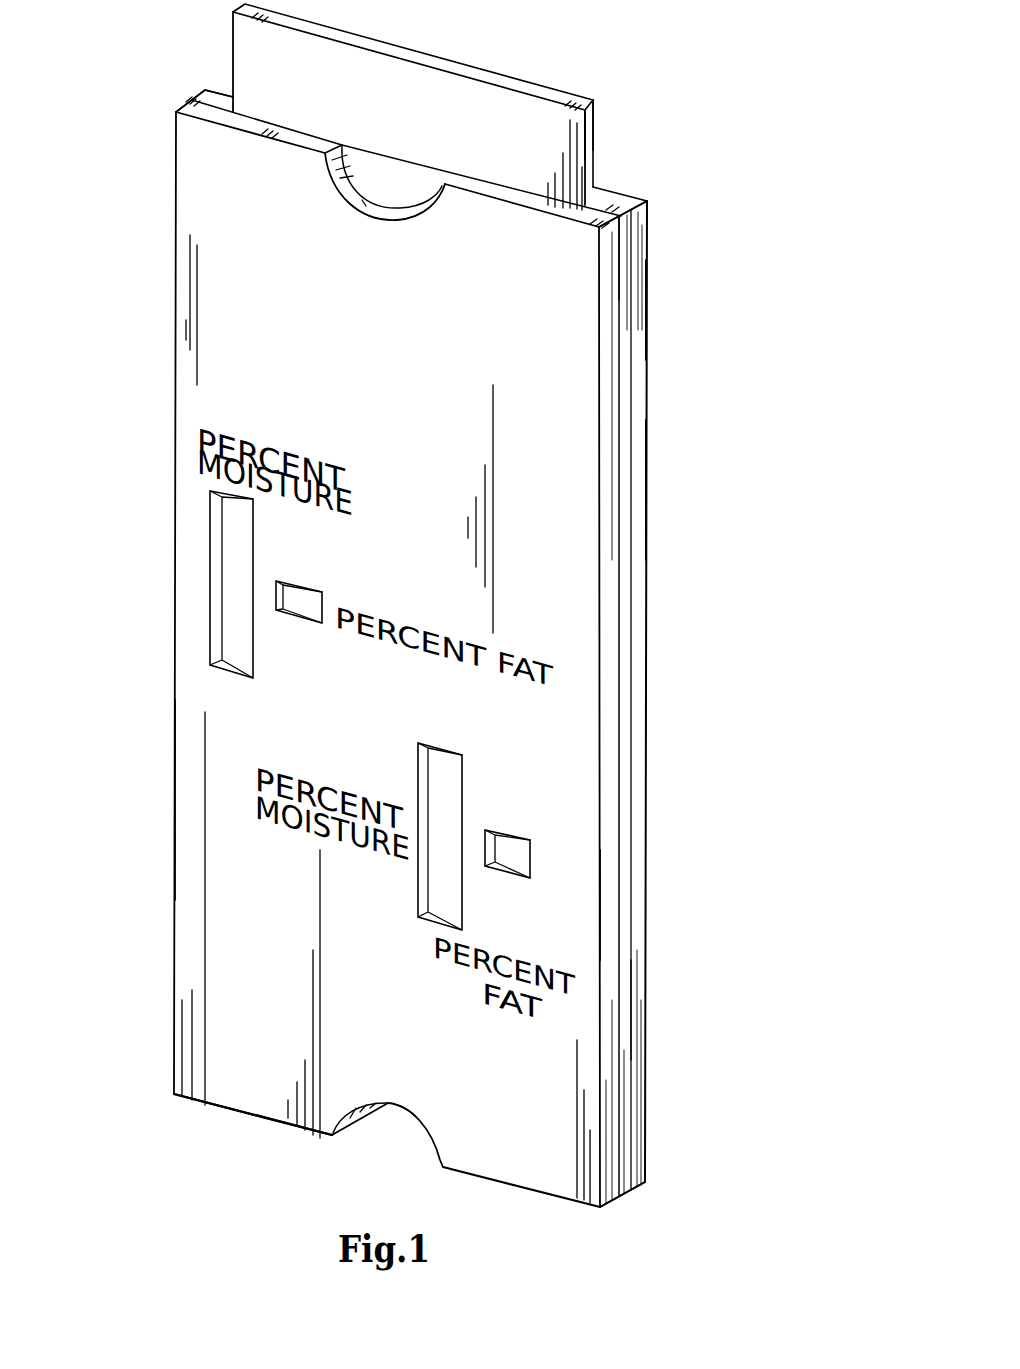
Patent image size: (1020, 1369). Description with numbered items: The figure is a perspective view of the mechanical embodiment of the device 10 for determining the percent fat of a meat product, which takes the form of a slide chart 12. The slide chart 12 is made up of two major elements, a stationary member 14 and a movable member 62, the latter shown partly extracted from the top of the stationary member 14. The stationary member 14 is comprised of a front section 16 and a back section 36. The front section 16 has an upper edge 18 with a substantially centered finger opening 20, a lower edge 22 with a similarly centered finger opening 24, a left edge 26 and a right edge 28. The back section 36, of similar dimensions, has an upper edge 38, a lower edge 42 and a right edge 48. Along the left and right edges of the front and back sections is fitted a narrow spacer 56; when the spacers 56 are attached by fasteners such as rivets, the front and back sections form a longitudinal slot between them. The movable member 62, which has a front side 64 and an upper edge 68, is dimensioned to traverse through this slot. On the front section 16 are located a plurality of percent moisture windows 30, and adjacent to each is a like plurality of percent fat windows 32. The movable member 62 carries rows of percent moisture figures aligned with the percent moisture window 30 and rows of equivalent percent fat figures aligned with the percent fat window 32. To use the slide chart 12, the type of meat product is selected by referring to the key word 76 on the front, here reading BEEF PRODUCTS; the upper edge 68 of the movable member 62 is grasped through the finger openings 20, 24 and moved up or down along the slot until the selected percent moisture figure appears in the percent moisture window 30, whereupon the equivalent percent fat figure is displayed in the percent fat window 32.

The device 10 is at (723, 89).
The slide chart 12 is at (647, 534).
The stationary member 14 is at (585, 420).
The front section 16 is at (715, 475).
The upper edge 18 is at (203, 99).
The finger opening 20 is at (377, 184).
The lower edge 22 is at (203, 1103).
The finger opening 24 is at (372, 1132).
The left edge 26 is at (173, 803).
The right edge 28 is at (640, 905).
The percent moisture window 30 is at (232, 547).
The percent fat window 32 is at (303, 603).
The back section 36 is at (642, 300).
The upper edge 38 is at (623, 200).
The lower edge 42 is at (638, 1183).
The right edge 48 is at (635, 1015).
The spacer 56 is at (623, 237).
The movable member 62 is at (557, 133).
The front side 64 is at (663, 125).
The upper edge 68 is at (520, 88).
The key word 76 is at (208, 275).